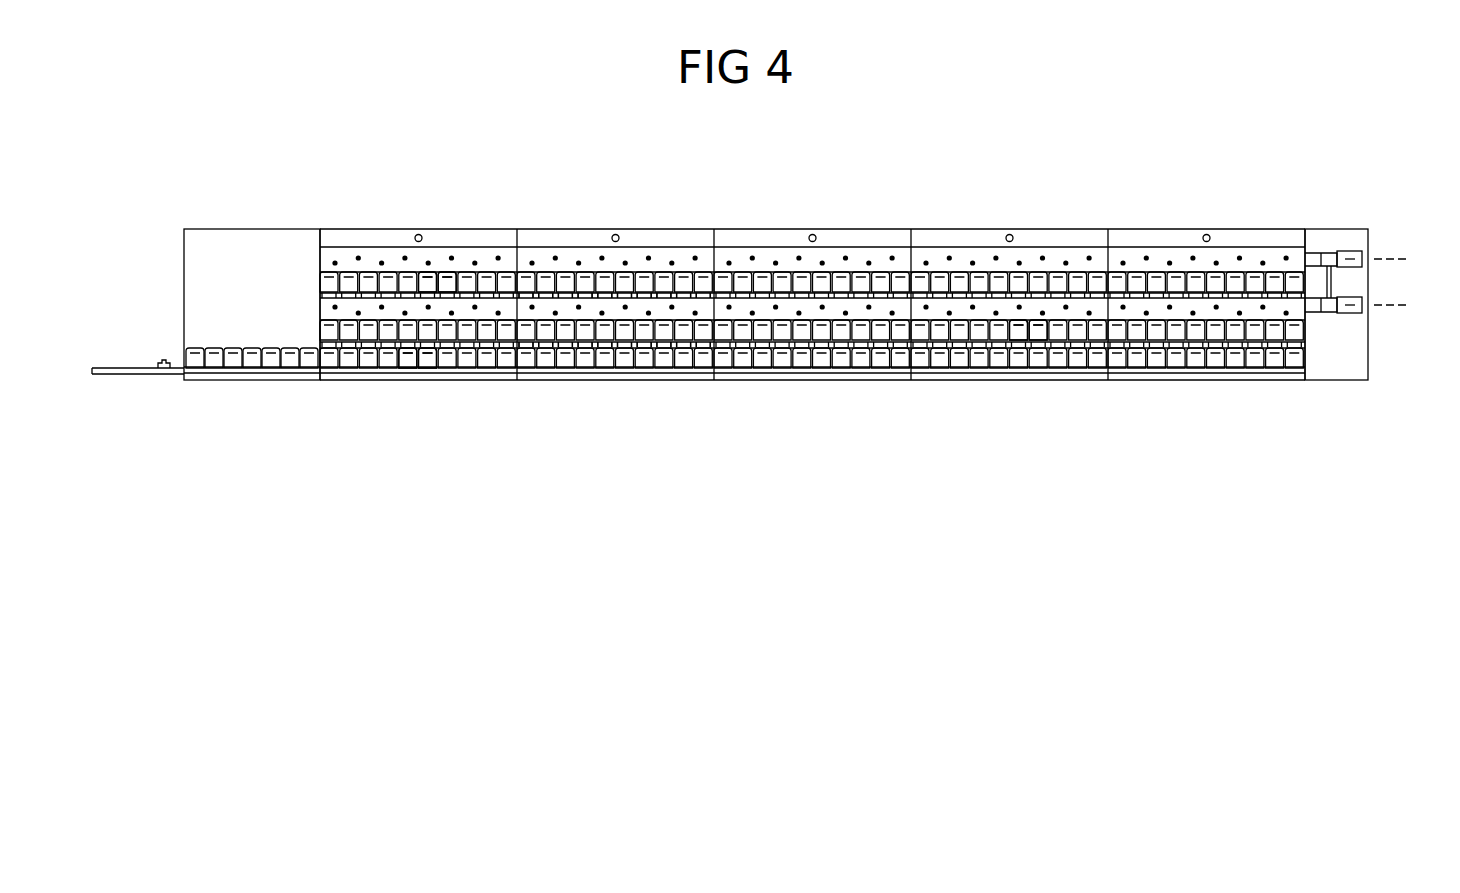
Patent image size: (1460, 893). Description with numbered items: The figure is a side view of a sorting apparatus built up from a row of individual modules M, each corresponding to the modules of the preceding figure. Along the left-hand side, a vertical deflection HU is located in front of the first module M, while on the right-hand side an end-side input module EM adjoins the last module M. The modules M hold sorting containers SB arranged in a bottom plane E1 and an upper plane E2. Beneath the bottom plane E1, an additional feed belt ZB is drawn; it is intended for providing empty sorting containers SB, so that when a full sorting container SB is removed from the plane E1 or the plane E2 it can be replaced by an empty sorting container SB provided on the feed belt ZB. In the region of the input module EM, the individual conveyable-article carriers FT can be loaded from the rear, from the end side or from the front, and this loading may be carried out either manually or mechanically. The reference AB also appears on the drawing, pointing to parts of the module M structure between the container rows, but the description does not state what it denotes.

The vertical deflection HU is at (258, 223).
The module M is at (672, 226).
The sorting container SB is at (452, 278).
The connection unit AB is at (565, 300).
The feed belt ZB is at (127, 372).
The input module EM is at (1343, 383).
The conveyable-article carrier FT is at (1345, 250).
The plane E2 is at (1372, 258).
The bottom plane E1 is at (1372, 295).